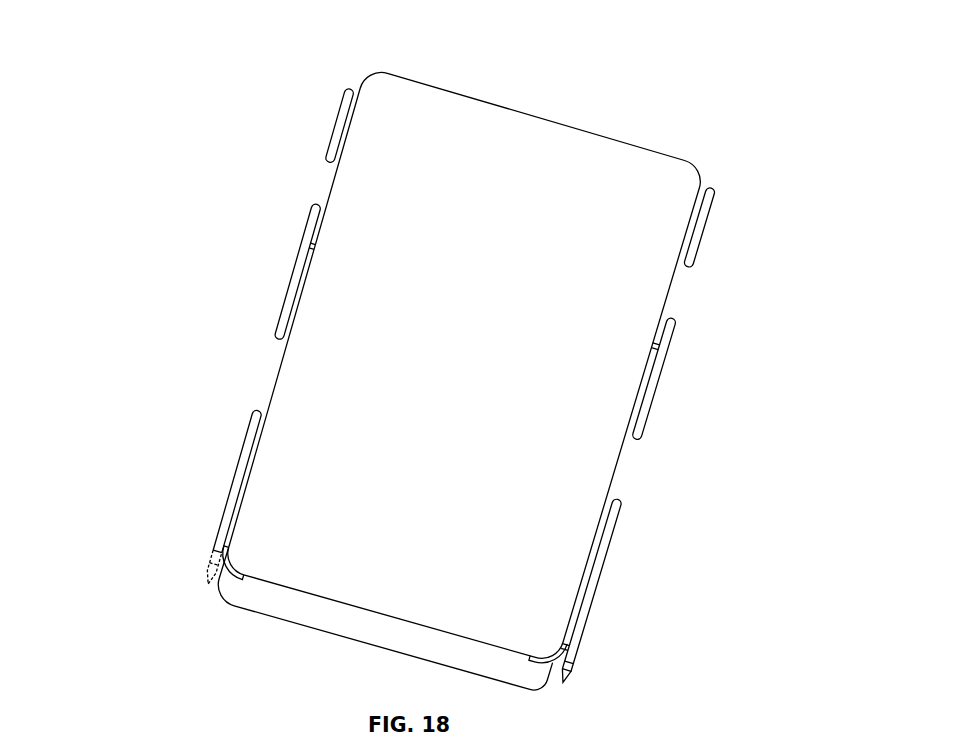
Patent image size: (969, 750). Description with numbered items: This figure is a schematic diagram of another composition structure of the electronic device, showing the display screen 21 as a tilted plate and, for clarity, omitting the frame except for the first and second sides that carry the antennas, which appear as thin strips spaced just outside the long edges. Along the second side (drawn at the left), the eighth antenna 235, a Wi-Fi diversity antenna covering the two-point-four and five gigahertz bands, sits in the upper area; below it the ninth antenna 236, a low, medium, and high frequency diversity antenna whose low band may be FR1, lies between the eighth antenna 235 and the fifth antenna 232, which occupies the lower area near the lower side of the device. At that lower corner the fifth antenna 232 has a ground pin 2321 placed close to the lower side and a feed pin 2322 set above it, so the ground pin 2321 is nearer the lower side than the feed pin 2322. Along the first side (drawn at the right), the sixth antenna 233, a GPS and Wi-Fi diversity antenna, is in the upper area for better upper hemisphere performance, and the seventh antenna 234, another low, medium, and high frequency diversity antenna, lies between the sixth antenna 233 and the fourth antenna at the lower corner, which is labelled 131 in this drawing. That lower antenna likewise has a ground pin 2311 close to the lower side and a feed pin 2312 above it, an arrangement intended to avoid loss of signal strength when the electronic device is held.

The display screen 21 is at (549, 148).
The eighth antenna 235 is at (341, 122).
The ninth antenna 236 is at (293, 268).
The sixth antenna 233 is at (705, 241).
The seventh antenna 234 is at (651, 401).
The fifth antenna 232 is at (158, 500).
The feed pin 2322 is at (225, 546).
The ground pin 2321 is at (222, 576).
The first positioning portion 131 is at (630, 591).
The feed pin 2312 is at (572, 643).
The ground pin 2311 is at (568, 666).